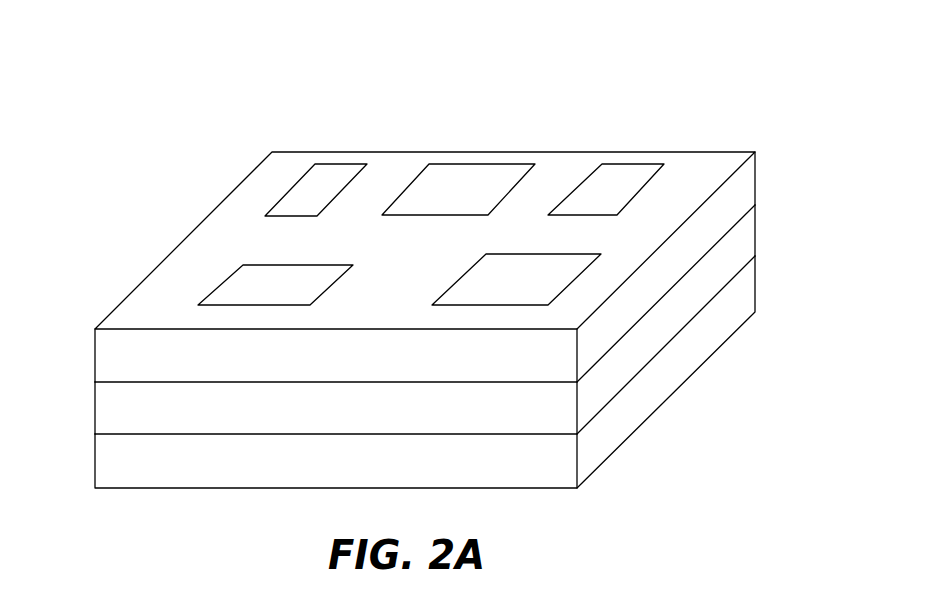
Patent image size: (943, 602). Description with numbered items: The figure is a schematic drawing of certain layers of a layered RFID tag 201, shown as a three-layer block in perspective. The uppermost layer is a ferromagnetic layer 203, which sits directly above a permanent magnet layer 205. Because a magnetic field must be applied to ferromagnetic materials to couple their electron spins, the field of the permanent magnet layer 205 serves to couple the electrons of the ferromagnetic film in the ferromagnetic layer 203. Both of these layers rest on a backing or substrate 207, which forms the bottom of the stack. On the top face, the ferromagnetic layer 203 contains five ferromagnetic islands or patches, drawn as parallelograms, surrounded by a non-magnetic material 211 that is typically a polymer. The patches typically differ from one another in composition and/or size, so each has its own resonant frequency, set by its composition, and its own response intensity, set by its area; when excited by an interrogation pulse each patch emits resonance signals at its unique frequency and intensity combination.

The layered RFID tag 201 is at (450, 268).
The ferromagnetic layer 203 is at (747, 180).
The permanent magnet layer 205 is at (747, 238).
The backing or substrate 207 is at (747, 293).
The non-magnetic material 211 is at (561, 172).